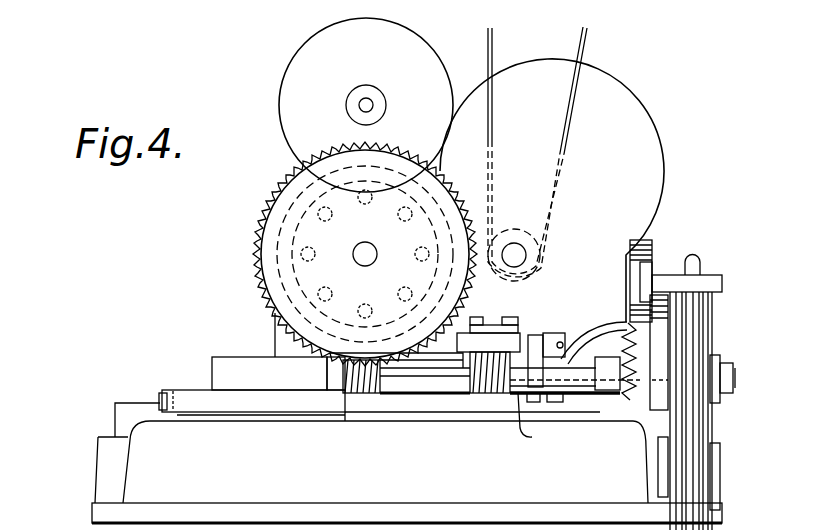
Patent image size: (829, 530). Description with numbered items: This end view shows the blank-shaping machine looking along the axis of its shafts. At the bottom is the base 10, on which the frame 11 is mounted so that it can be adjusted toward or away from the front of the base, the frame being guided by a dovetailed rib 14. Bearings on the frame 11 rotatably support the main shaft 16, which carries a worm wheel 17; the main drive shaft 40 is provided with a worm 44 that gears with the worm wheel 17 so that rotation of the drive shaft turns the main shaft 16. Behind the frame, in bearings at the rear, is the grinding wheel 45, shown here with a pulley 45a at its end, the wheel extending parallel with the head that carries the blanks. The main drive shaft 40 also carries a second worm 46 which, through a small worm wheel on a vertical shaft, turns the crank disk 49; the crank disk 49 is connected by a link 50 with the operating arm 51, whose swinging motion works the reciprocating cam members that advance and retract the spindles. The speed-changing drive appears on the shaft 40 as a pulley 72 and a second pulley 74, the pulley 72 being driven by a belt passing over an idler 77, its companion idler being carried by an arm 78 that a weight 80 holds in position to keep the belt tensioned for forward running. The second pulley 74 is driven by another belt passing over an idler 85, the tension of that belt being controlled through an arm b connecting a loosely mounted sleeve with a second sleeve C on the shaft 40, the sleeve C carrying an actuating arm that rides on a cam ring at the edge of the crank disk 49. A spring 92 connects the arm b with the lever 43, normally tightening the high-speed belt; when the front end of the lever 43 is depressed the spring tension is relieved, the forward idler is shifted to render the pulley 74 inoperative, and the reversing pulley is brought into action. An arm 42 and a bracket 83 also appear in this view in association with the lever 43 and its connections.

The base 10 is at (432, 455).
The frame 11 is at (258, 383).
The dovetailed rib 14 is at (128, 413).
The main shaft 16 is at (378, 228).
The worm wheel 17 is at (263, 188).
The main drive shaft 40 is at (402, 378).
The arm 42 is at (597, 333).
The lever 43 is at (192, 400).
The worm 44 is at (345, 374).
The grinding wheel 45 is at (583, 207).
The pulley 45a is at (366, 105).
The second worm 46 is at (556, 333).
The crank disk 49 is at (512, 342).
The link 50 is at (490, 324).
The operating arm 51 is at (445, 336).
The pulley 72 is at (717, 336).
The second pulley 74 is at (670, 410).
The idler 77 is at (700, 263).
The arm 78 is at (666, 275).
The weight 80 is at (641, 241).
The bracket 83 is at (615, 361).
The idler 85 is at (668, 450).
The spring 92 is at (641, 390).
The arm b is at (568, 331).
The sleeve C is at (527, 424).